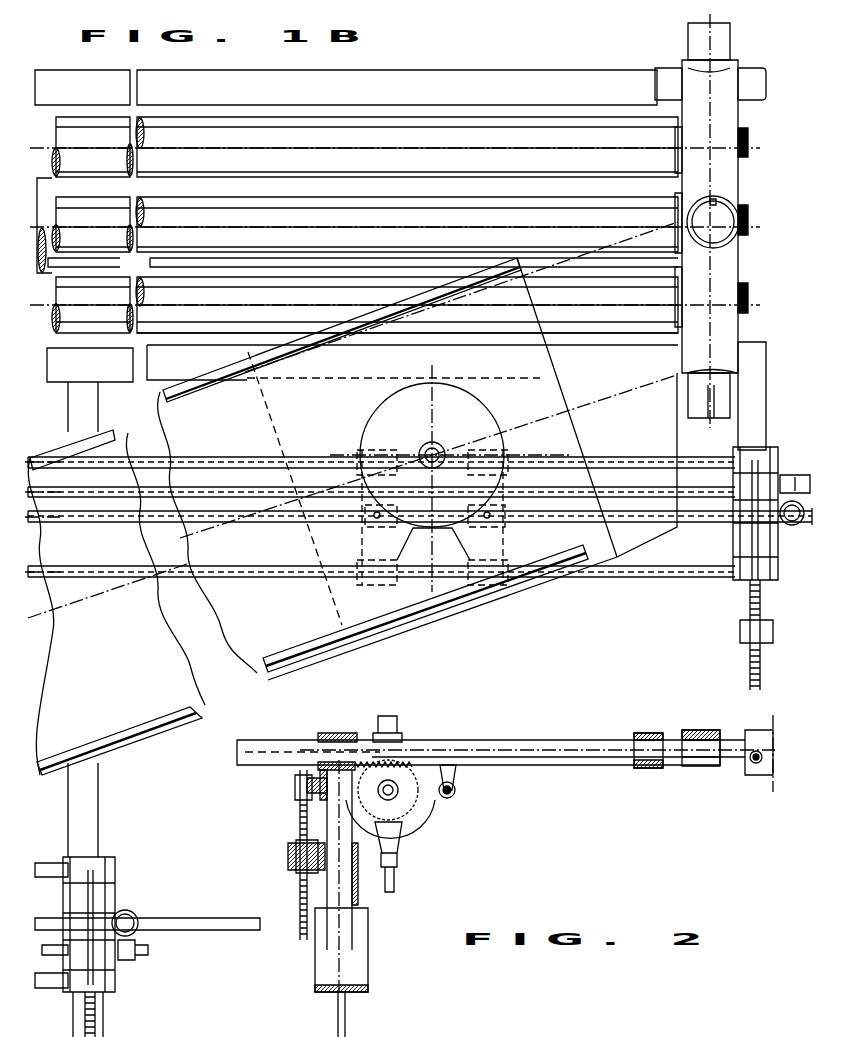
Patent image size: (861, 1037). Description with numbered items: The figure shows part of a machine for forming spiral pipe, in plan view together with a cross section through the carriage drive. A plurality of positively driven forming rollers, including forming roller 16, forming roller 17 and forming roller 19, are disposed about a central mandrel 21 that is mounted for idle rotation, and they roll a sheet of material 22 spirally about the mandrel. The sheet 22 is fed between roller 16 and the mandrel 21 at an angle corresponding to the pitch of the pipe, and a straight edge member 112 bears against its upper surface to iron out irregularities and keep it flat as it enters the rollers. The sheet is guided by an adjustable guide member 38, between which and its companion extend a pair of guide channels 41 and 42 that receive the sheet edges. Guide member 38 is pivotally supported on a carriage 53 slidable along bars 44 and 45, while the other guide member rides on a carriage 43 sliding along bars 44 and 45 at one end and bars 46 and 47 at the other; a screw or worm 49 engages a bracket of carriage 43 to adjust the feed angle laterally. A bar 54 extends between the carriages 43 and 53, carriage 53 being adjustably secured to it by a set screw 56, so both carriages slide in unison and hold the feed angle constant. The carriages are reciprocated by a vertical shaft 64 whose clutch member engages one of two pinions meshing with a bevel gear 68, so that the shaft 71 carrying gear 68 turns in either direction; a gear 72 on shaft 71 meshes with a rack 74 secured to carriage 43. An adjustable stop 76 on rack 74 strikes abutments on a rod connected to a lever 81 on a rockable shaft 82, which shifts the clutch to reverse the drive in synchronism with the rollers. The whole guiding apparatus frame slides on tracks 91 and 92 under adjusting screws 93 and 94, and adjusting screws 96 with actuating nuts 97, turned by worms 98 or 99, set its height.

In FIG. 1B, the forming roller 17 is at (503, 120).
In FIG. 1B, the central mandrel 21 is at (672, 182).
In FIG. 1B, the forming roller 16 is at (575, 238).
In FIG. 1B, the straight edge member 112 is at (622, 258).
In FIG. 1B, the forming roller 19 is at (185, 325).
In FIG. 1B, the guide channel 41 is at (212, 370).
In FIG. 1B, the track bar 44 is at (152, 458).
In FIG. 2, the track bar 44 is at (568, 740).
In FIG. 1B, the guide member 38 is at (570, 426).
In FIG. 1B, the sheet material 22 is at (240, 603).
In FIG. 1B, the guide channel 42 is at (373, 628).
In FIG. 1B, the set screw 56 is at (489, 520).
In FIG. 1B, the carriage 53 is at (508, 528).
In FIG. 1B, the bar 54 is at (704, 516).
In FIG. 1B, the track bar 45 is at (664, 578).
In FIG. 1B, the adjusting screw 94 is at (750, 601).
In FIG. 1B, the worm 98 is at (790, 472).
In FIG. 2, the actuating nut 97 is at (293, 854).
In FIG. 1B, the track bar 46 is at (46, 860).
In FIG. 1B, the track 91 is at (99, 836).
In FIG. 1B, the worm 99 is at (131, 947).
In FIG. 1B, the track bar 47 is at (53, 988).
In FIG. 1B, the adjusting screw 93 is at (99, 1006).
In FIG. 2, the rack 74 is at (558, 766).
In FIG. 2, the gear 72 is at (401, 756).
In FIG. 2, the adjustable stop 76 is at (650, 734).
In FIG. 2, the carriage 43 is at (705, 735).
In FIG. 2, the screw or worm 49 is at (755, 765).
In FIG. 2, the lever 81 is at (457, 777).
In FIG. 2, the rockable shaft 82 is at (456, 792).
In FIG. 2, the shaft 71 is at (396, 793).
In FIG. 2, the bevel gear 68 is at (421, 822).
In FIG. 2, the vertical shaft 64 is at (395, 879).
In FIG. 2, the adjusting screw 96 is at (300, 816).
In FIG. 2, the track 92 is at (346, 1024).